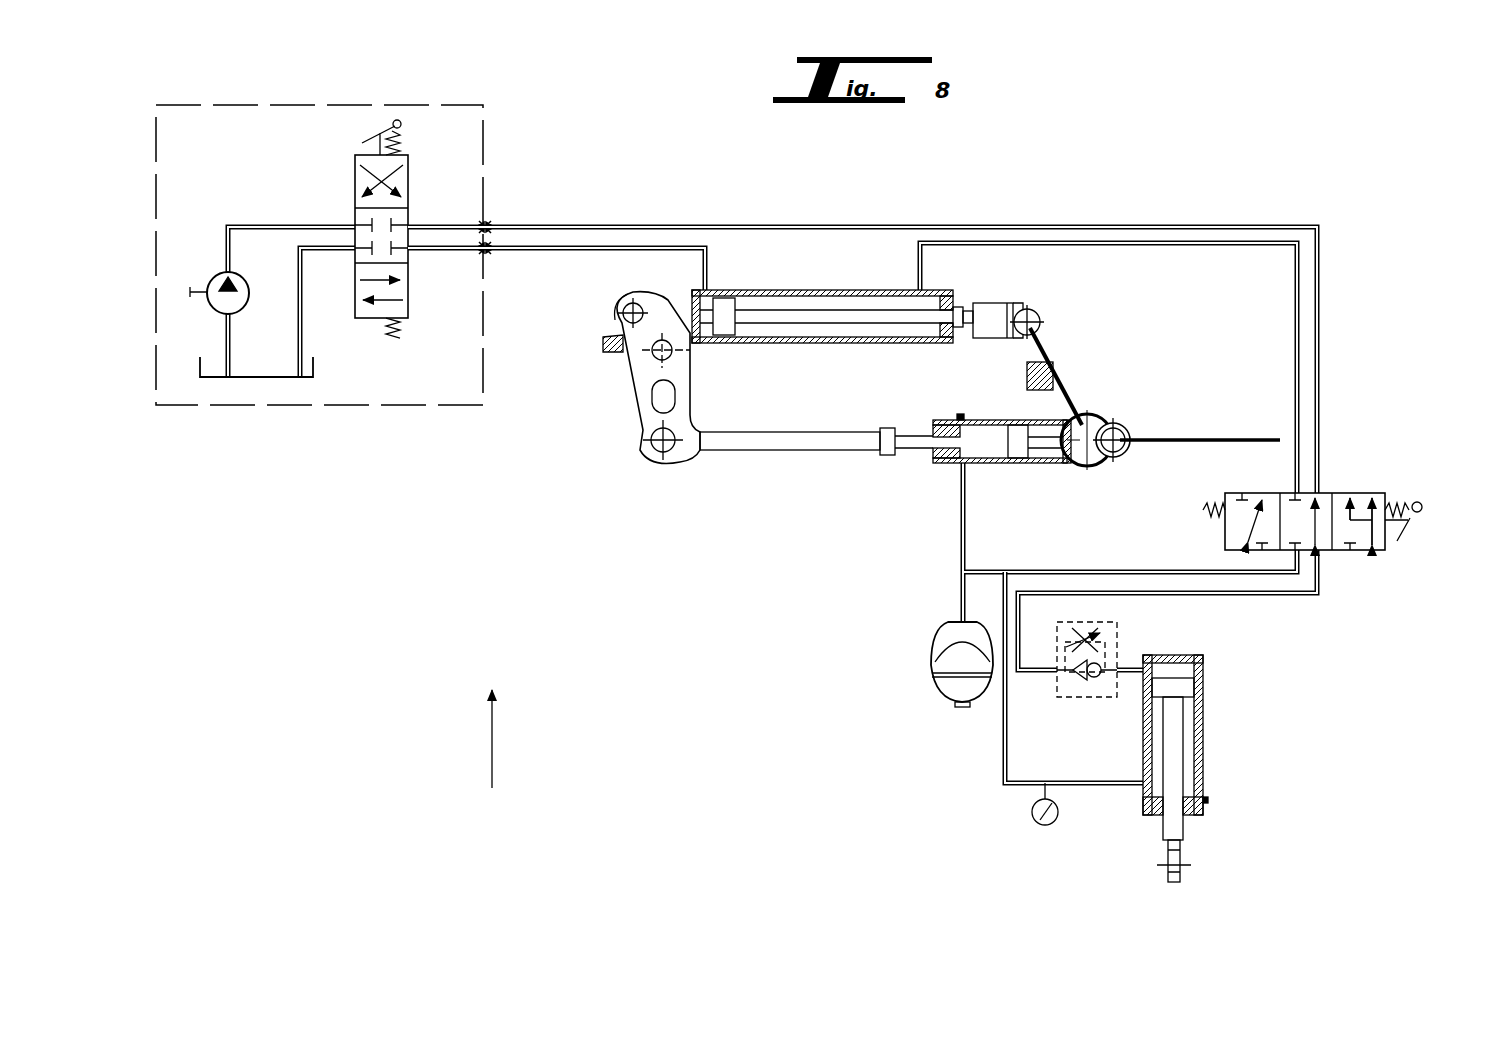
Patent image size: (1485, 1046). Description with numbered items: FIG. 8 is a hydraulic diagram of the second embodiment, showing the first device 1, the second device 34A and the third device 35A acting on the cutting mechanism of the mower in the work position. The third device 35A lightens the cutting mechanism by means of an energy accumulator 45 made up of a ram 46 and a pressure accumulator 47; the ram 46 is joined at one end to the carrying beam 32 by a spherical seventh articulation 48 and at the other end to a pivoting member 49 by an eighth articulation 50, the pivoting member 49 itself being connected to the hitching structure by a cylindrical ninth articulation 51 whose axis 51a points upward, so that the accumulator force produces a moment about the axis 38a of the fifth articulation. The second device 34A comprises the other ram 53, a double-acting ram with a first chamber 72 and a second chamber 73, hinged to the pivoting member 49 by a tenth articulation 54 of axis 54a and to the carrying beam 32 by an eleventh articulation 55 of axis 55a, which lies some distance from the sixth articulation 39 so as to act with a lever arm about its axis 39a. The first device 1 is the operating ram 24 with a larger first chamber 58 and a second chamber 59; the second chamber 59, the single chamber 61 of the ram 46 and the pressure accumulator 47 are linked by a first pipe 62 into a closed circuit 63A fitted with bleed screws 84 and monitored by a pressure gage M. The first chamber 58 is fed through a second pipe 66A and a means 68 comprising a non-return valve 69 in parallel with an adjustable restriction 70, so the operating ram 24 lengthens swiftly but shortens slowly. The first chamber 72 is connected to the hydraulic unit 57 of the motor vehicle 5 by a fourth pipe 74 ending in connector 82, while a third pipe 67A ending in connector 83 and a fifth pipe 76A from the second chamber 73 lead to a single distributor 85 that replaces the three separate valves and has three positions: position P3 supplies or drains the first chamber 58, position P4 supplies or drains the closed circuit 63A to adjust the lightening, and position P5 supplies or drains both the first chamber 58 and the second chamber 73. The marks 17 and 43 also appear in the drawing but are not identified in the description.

The first device 1 is at (1214, 752).
The motor vehicle 5 is at (372, 414).
The direction of travel 17 is at (492, 738).
The operating ram 24 is at (1200, 697).
The carrying beam 32 is at (1222, 440).
The second device 34A is at (832, 330).
The third device 35A is at (919, 700).
The axis of the fifth articulation 38a is at (1090, 416).
The sixth articulation 39 is at (1107, 466).
The axis of the sixth articulation 39a is at (1080, 468).
The connecting rod 43 is at (789, 458).
The energy accumulator 45 is at (928, 472).
The ram 46 is at (1063, 587).
The pressure accumulator 47 is at (958, 706).
The seventh articulation 48 is at (1118, 422).
The pivoting member 49 is at (621, 401).
The eighth articulation 50 is at (656, 468).
The ninth articulation 51 is at (643, 362).
The longitudinal axis of the ninth articulation 51a is at (658, 354).
The other ram 53 is at (858, 292).
The tenth articulation 54 is at (622, 312).
The longitudinal axis of the tenth articulation 54a is at (643, 306).
The eleventh articulation 55 is at (1044, 306).
The longitudinal axis of the eleventh articulation 55a is at (1035, 308).
The hydraulic unit 57 is at (494, 111).
The first chamber 58 is at (1195, 657).
The second chamber 59 is at (1190, 742).
The single chamber 61 is at (985, 460).
The first pipe 62 is at (1100, 786).
The closed circuit 63A is at (1003, 767).
The second pipe 66A is at (1307, 598).
The third pipe 67A is at (1103, 225).
The means 68 is at (1133, 679).
The non-return valve 69 is at (1090, 678).
The adjustable restriction 70 is at (1097, 643).
The first chamber 72 is at (705, 342).
The second chamber 73 is at (862, 346).
The fourth pipe 74 is at (612, 255).
The fifth pipe 76A is at (1295, 375).
The connector 82 is at (486, 252).
The connector 83 is at (483, 223).
The bleed screws 84 is at (958, 417).
The single distributor 85 is at (1340, 512).
The pressure gage M is at (1045, 826).
The position P3 is at (1313, 535).
The position P4 is at (1234, 510).
The position P5 is at (1380, 510).